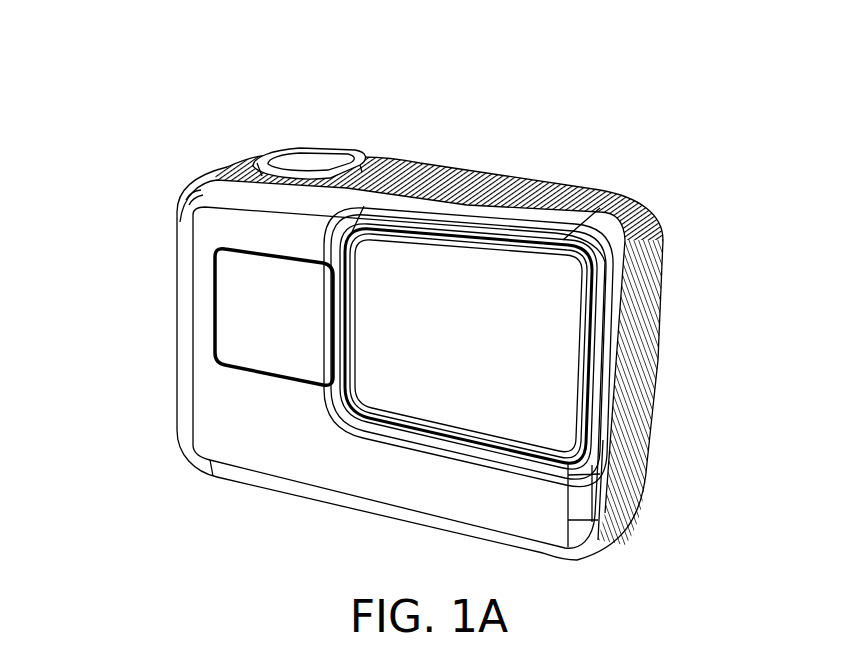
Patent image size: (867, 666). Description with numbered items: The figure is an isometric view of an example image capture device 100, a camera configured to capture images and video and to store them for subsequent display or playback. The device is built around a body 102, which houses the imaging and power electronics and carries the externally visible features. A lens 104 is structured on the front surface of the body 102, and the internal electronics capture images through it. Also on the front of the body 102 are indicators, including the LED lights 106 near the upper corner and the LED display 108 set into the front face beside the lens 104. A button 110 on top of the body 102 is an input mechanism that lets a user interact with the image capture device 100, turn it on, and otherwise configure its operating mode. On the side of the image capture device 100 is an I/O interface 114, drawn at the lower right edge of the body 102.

The image capture device 100 is at (422, 299).
The body 102 is at (575, 178).
The lens 104 is at (545, 360).
The LED lights 106 is at (178, 193).
The LED display 108 is at (225, 325).
The buttons 110 is at (303, 140).
The I/O interface 114 is at (645, 462).